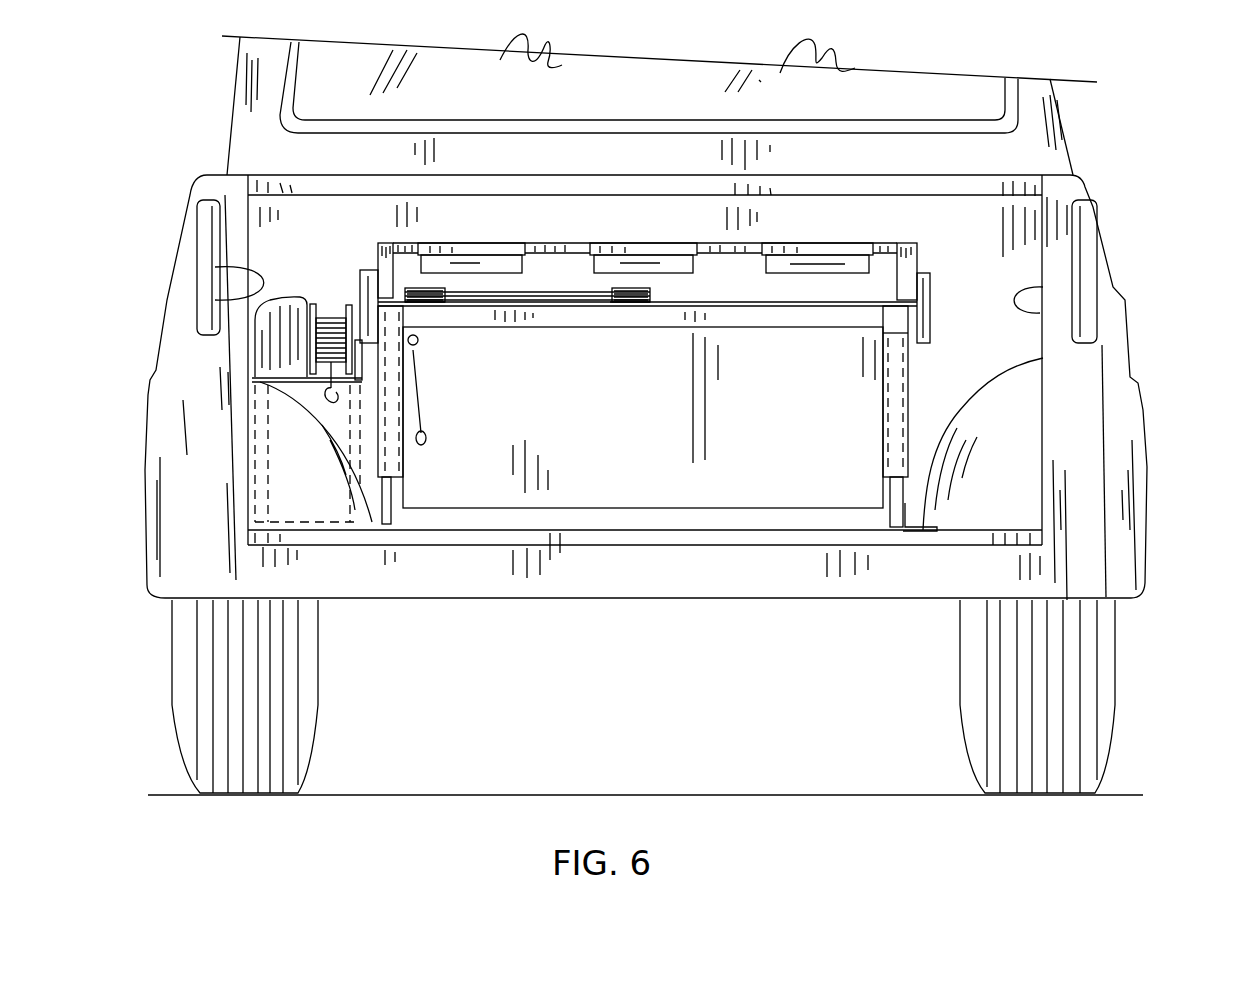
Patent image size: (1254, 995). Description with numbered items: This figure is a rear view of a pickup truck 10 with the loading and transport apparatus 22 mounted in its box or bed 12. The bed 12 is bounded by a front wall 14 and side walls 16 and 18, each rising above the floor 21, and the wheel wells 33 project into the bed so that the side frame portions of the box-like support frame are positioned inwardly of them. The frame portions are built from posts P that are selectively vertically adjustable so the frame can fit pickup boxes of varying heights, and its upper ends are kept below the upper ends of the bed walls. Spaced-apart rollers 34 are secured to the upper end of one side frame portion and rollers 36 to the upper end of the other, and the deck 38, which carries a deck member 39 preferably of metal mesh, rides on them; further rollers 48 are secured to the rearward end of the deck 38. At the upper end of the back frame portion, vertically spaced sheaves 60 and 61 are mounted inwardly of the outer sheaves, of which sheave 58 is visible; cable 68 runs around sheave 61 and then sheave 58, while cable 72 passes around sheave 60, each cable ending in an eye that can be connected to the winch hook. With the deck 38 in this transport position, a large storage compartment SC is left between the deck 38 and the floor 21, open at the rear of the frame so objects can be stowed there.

The pickup truck 10 is at (1146, 161).
The box or bed 12 is at (1010, 283).
The front wall 14 is at (335, 253).
The side wall 16 is at (1020, 296).
The side wall 18 is at (262, 285).
The floor 21 is at (748, 512).
The apparatus 22 is at (621, 525).
The wheel wells 33 is at (310, 485).
The rollers 34 is at (906, 286).
The rollers 36 is at (386, 283).
The deck 38 is at (910, 258).
The deck member 39 is at (810, 242).
The rollers 48 is at (683, 304).
The sheave 58 is at (426, 289).
The sheave 60 is at (433, 304).
The sheave 61 is at (646, 289).
The cable 68 is at (561, 292).
The cable 72 is at (580, 303).
The posts P is at (883, 407).
The storage compartment SC is at (596, 454).